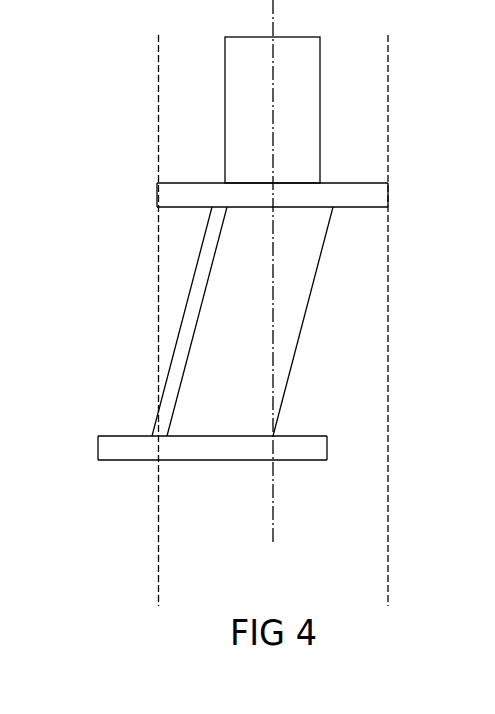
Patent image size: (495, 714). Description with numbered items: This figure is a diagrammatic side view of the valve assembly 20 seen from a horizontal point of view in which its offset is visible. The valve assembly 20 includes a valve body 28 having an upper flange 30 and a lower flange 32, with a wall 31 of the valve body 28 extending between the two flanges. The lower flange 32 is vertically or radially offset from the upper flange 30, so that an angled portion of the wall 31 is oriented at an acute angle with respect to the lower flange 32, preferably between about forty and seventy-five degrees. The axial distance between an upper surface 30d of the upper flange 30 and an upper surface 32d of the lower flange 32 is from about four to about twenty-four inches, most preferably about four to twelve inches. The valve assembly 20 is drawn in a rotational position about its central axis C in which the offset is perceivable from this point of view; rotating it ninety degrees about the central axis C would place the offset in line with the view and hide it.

The valve assembly 20 is at (406, 127).
The valve body 28 is at (273, 207).
The upper flange 30 is at (307, 225).
The upper surface of the upper flange 30d is at (358, 207).
The wall 31 is at (207, 330).
The lower flange 32 is at (233, 436).
The upper surface of the lower flange 32d is at (317, 432).
The central axis C is at (273, 522).